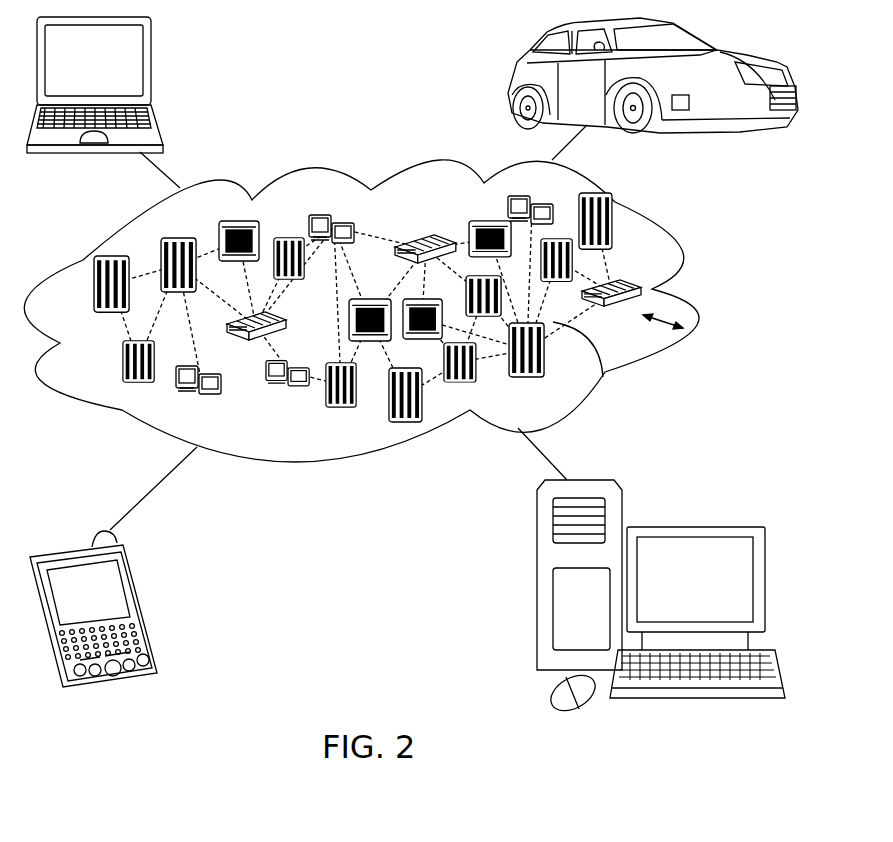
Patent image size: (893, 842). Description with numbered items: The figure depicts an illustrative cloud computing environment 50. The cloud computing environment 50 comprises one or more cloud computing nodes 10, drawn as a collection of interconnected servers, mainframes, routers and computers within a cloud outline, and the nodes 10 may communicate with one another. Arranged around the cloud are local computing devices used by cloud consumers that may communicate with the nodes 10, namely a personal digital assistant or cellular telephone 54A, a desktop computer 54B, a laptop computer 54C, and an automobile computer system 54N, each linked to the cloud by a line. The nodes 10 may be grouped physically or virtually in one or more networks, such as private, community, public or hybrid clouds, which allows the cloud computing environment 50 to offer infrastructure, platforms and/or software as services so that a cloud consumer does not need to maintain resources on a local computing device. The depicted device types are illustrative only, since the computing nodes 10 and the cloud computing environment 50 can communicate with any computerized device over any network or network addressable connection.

The cloud computing nodes 10 is at (678, 330).
The cloud computing environment 50 is at (695, 292).
The personal digital assistant or cellular telephone 54A is at (143, 605).
The desktop computer 54B is at (692, 525).
The laptop computer 54C is at (155, 68).
The automobile computer system 54N is at (512, 82).